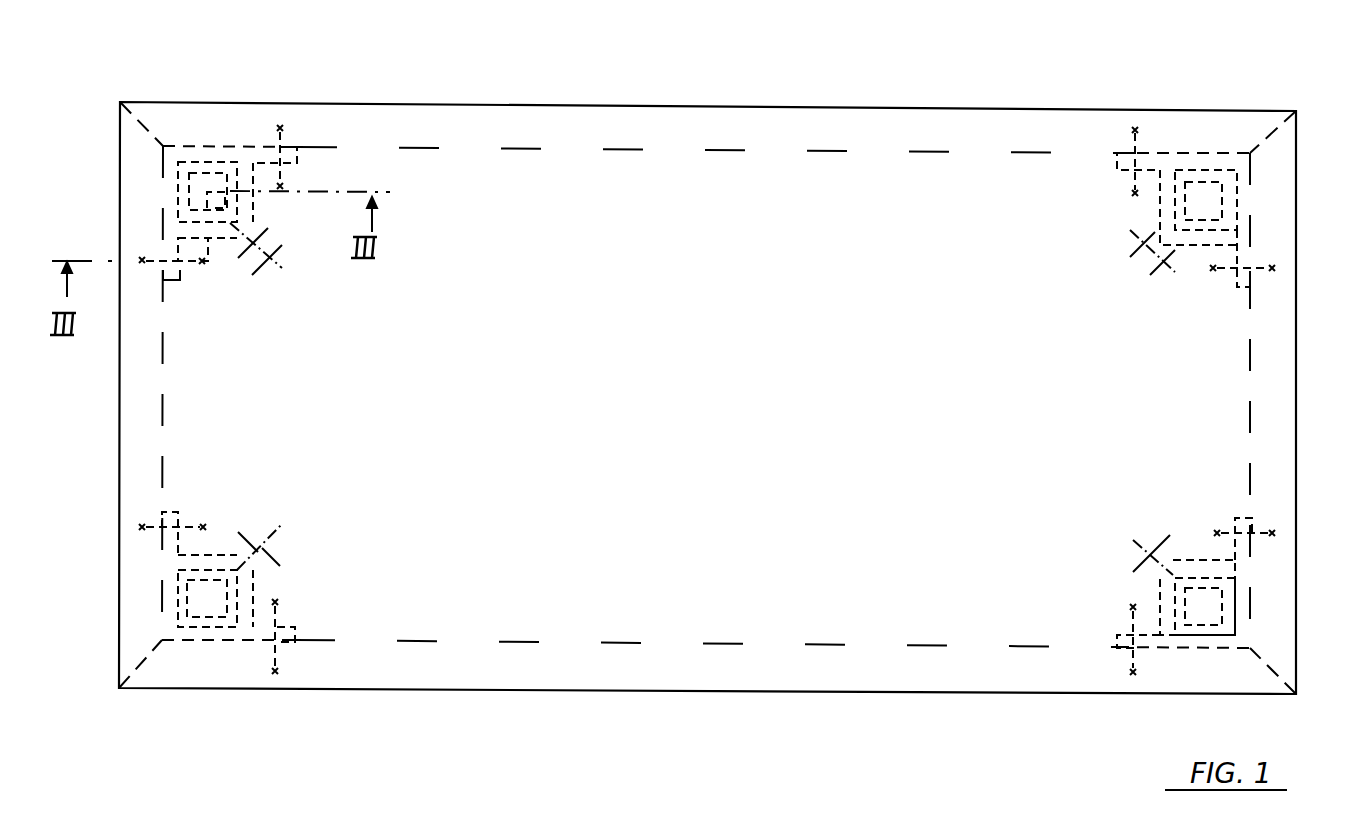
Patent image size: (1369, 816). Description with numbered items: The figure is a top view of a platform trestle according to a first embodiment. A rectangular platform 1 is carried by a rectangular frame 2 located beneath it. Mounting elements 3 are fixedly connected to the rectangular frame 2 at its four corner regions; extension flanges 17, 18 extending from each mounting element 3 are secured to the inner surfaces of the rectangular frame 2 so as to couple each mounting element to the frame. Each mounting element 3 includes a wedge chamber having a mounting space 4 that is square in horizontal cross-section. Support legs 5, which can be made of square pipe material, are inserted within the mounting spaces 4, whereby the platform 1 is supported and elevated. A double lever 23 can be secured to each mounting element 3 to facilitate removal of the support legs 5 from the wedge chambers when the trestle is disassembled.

The rectangular platform 1 is at (760, 187).
The rectangular frame 2 is at (650, 150).
The mounting element 3 is at (173, 231).
The mounting space 4 is at (1206, 177).
The support leg 5 is at (1227, 203).
The extension flange 17 is at (289, 150).
The extension flange 18 is at (168, 283).
The double lever 23 is at (286, 268).